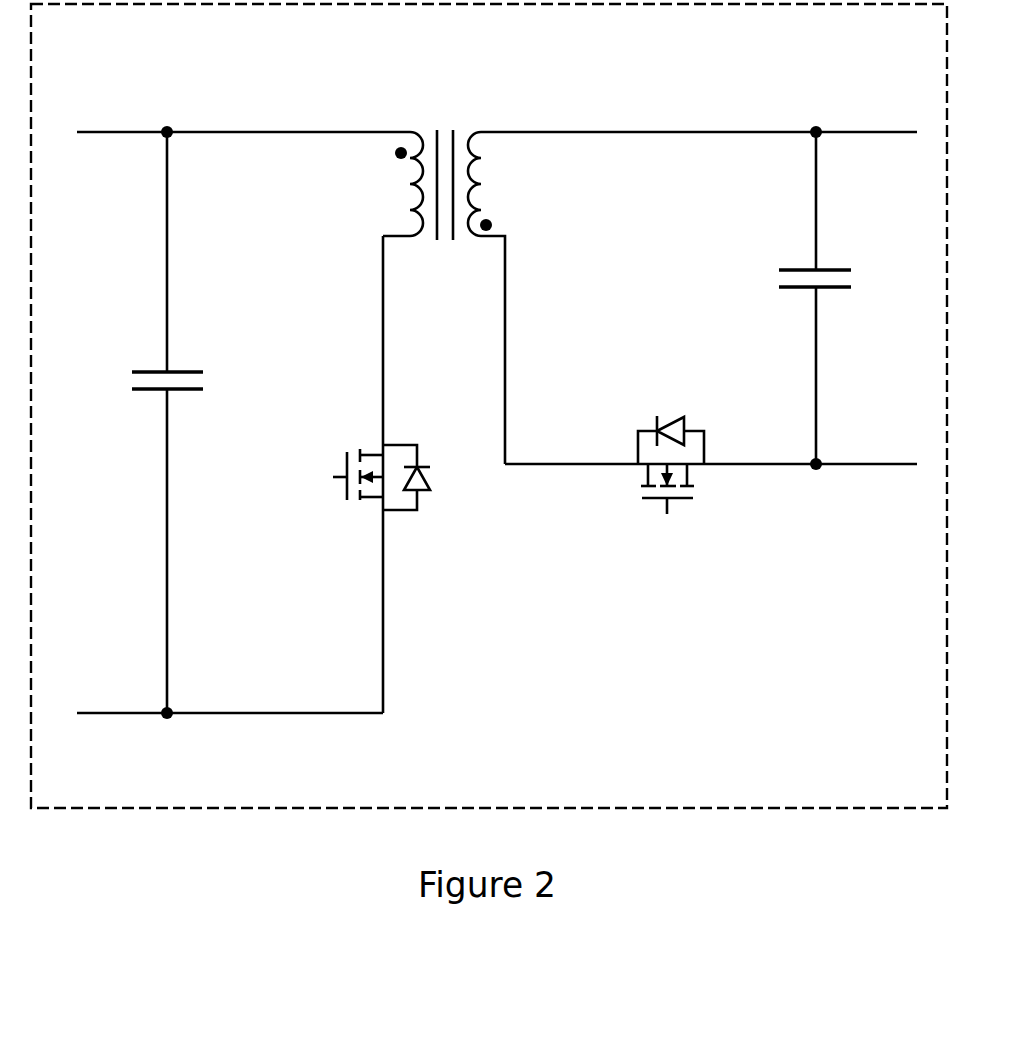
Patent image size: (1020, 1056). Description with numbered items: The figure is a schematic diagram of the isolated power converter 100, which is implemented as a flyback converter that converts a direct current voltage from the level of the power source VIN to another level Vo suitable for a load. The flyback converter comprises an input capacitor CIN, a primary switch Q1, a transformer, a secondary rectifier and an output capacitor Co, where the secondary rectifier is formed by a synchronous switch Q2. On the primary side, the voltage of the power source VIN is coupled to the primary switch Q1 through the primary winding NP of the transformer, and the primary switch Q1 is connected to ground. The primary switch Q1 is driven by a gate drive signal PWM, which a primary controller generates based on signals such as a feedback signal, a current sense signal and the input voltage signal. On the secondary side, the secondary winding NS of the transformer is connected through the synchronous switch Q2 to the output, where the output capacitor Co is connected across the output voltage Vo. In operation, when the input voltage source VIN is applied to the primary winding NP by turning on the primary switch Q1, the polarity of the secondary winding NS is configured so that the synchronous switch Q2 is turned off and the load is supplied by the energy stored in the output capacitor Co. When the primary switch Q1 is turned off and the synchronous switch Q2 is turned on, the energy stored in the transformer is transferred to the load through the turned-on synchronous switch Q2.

The isolated power converter 100 is at (511, 771).
The power source VIN is at (242, 113).
The input capacitor CIN is at (134, 422).
The primary winding NP is at (392, 184).
The secondary winding NS is at (499, 298).
The output voltage Vo is at (699, 116).
The output capacitor Co is at (844, 298).
The primary switch Q1 is at (393, 474).
The gate drive signal PWM is at (299, 478).
The synchronous switch Q2 is at (689, 476).